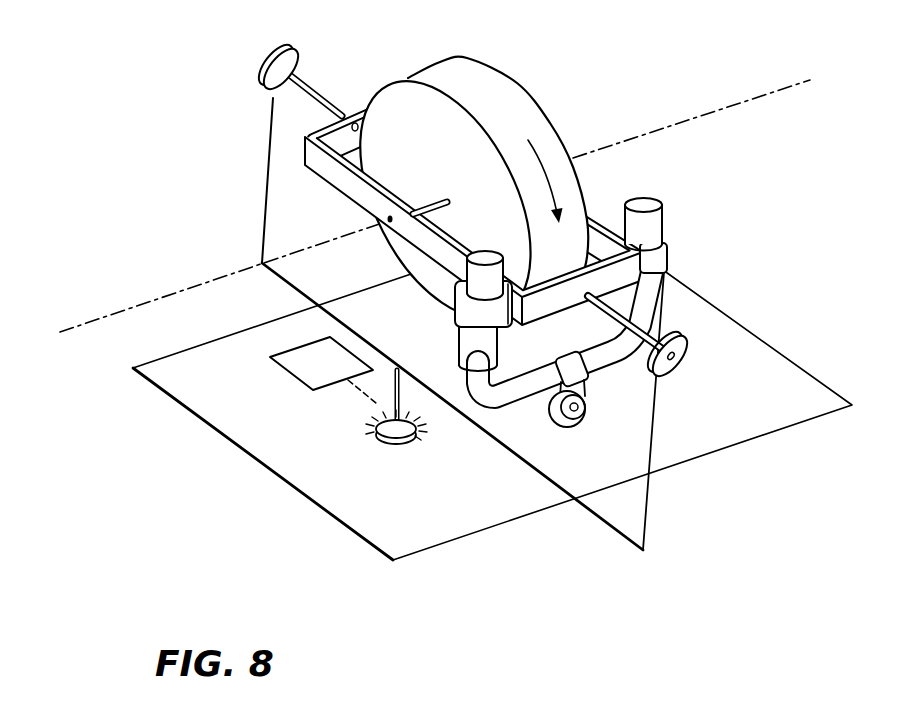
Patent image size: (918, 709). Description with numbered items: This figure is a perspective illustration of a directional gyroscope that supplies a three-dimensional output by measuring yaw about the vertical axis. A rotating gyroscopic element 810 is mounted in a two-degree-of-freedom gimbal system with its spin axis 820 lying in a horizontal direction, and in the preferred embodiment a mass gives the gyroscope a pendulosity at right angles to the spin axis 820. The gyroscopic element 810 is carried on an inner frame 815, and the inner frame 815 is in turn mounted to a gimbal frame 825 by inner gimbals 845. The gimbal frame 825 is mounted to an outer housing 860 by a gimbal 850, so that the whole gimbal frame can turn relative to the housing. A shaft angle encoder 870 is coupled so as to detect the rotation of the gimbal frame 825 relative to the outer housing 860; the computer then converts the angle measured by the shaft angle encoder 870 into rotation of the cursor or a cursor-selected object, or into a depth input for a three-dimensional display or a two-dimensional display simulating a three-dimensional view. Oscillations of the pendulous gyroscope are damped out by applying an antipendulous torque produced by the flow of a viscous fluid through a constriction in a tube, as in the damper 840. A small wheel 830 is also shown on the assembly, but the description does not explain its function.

The rotating gyroscopic element 810 is at (521, 86).
The inner frame 815 is at (410, 193).
The spin axis 820 is at (135, 304).
The gimbal frame 825 is at (645, 550).
The caster wheel 830 is at (590, 400).
The damper 840 is at (693, 213).
The inner gimbals 845 is at (268, 72).
The gimbal 850 is at (372, 411).
The outer housing 860 is at (395, 562).
The shaft angle encoder 870 is at (300, 343).